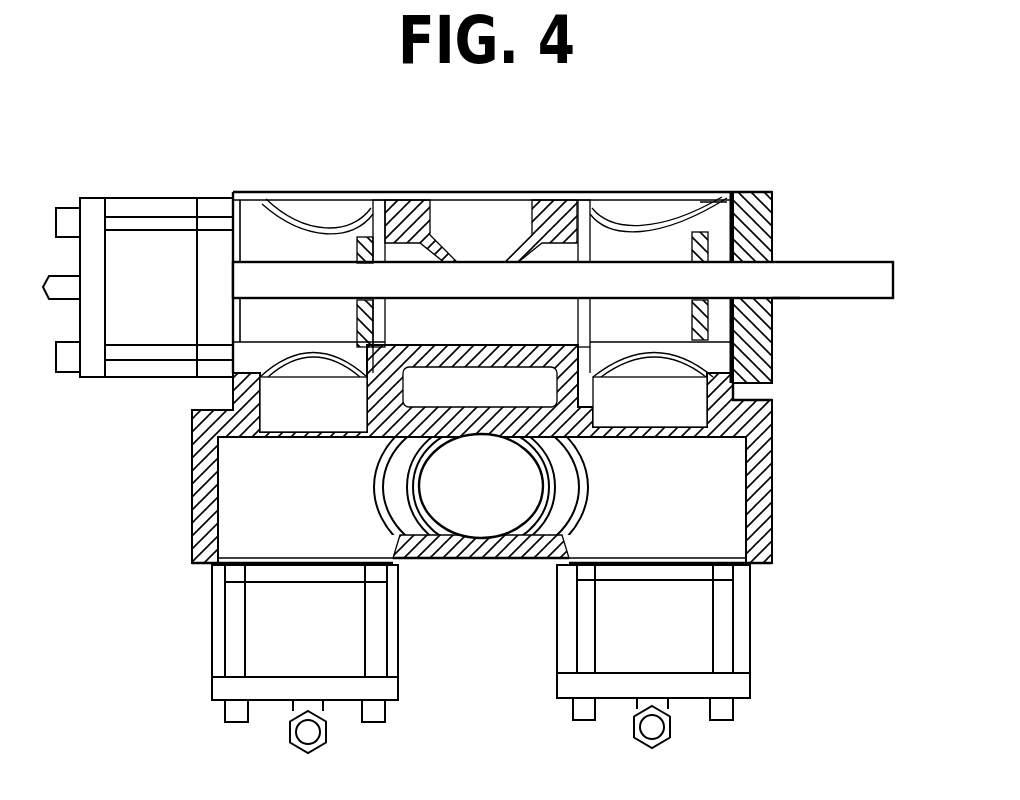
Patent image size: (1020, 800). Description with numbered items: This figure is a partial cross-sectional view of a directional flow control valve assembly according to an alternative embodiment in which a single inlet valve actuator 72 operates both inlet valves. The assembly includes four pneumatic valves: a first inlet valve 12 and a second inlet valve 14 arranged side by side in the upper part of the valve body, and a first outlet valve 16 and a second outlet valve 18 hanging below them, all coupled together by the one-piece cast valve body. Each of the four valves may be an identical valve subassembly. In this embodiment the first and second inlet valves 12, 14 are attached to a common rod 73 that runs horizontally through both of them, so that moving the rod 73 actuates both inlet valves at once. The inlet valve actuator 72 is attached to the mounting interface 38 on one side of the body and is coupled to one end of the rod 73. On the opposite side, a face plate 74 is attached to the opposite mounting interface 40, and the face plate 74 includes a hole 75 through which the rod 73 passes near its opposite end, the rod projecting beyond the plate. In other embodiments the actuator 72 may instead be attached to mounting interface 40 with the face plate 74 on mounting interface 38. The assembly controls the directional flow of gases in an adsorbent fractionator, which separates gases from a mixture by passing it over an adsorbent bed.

The first inlet valve 12 is at (690, 247).
The second inlet valve 14 is at (358, 238).
The first outlet valve 16 is at (257, 600).
The second outlet valve 18 is at (690, 595).
The mounting interface 38 is at (232, 198).
The mounting interface 40 is at (732, 193).
The inlet valve actuator 72 is at (113, 198).
The rod 73 is at (836, 260).
The face plate 74 is at (772, 364).
The hole 75 is at (777, 299).